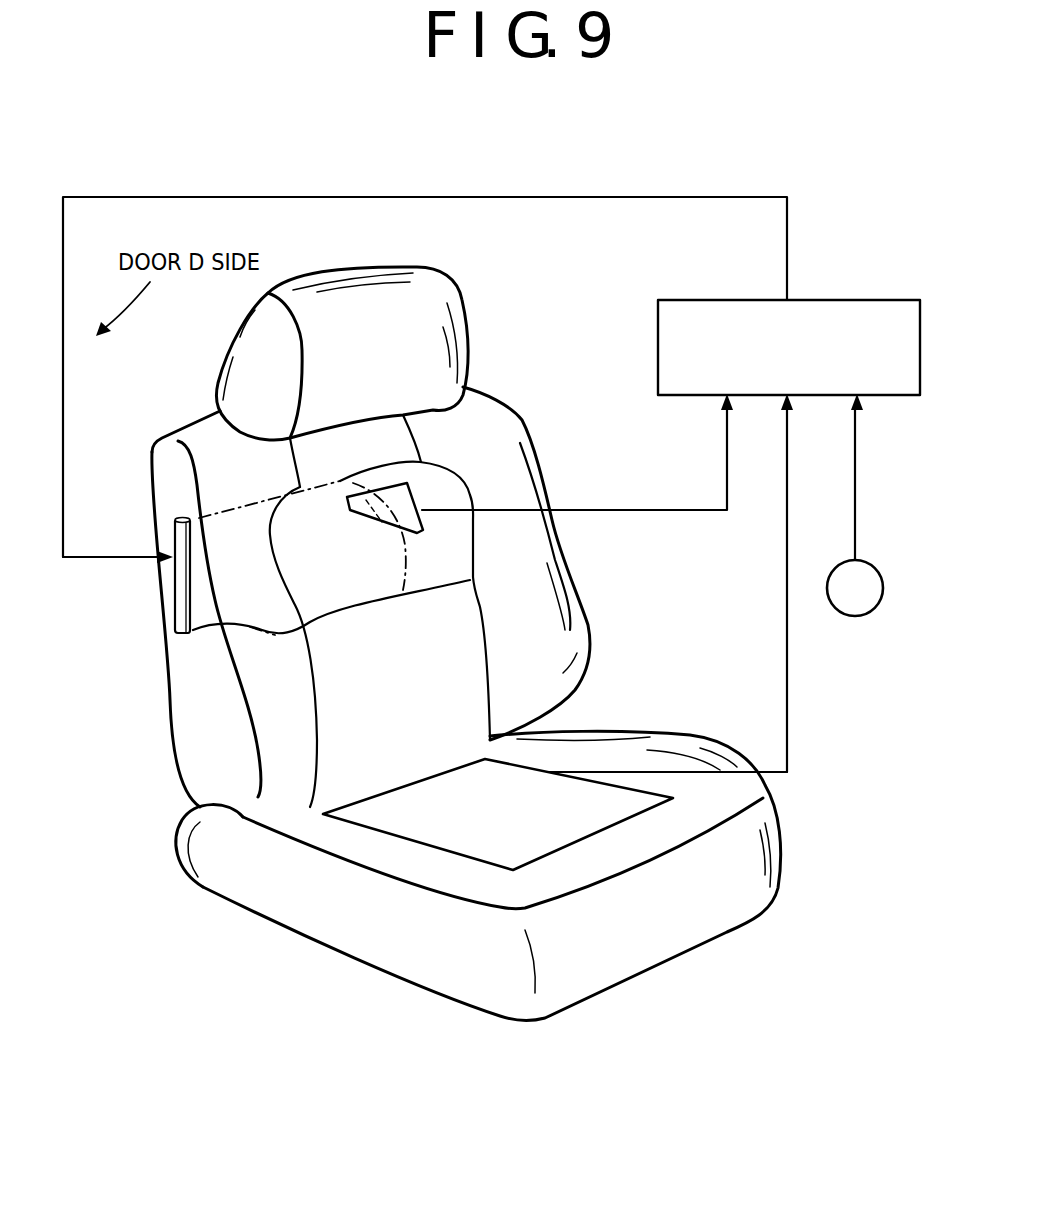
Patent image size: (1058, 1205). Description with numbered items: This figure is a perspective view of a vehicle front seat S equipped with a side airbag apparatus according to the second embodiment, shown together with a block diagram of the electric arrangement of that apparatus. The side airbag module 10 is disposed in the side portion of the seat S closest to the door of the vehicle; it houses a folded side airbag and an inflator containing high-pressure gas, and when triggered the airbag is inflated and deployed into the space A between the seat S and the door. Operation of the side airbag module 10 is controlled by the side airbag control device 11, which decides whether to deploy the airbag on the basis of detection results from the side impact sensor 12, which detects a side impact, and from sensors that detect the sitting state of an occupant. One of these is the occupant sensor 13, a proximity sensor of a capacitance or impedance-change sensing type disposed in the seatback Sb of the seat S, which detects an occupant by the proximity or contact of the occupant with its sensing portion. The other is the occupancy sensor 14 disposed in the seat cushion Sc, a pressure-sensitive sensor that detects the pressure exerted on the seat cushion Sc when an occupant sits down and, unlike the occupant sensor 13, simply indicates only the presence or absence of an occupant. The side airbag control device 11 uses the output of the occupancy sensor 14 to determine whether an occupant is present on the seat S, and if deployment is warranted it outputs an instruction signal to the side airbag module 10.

The side airbag module 10 is at (177, 600).
The side airbag control device 11 is at (856, 300).
The side impact sensor 12 is at (857, 617).
The occupant sensor 13 is at (417, 500).
The occupancy sensor 14 is at (583, 817).
The seat S is at (522, 311).
The seatback Sb is at (557, 607).
The seat cushion Sc is at (363, 855).
The space A is at (315, 635).